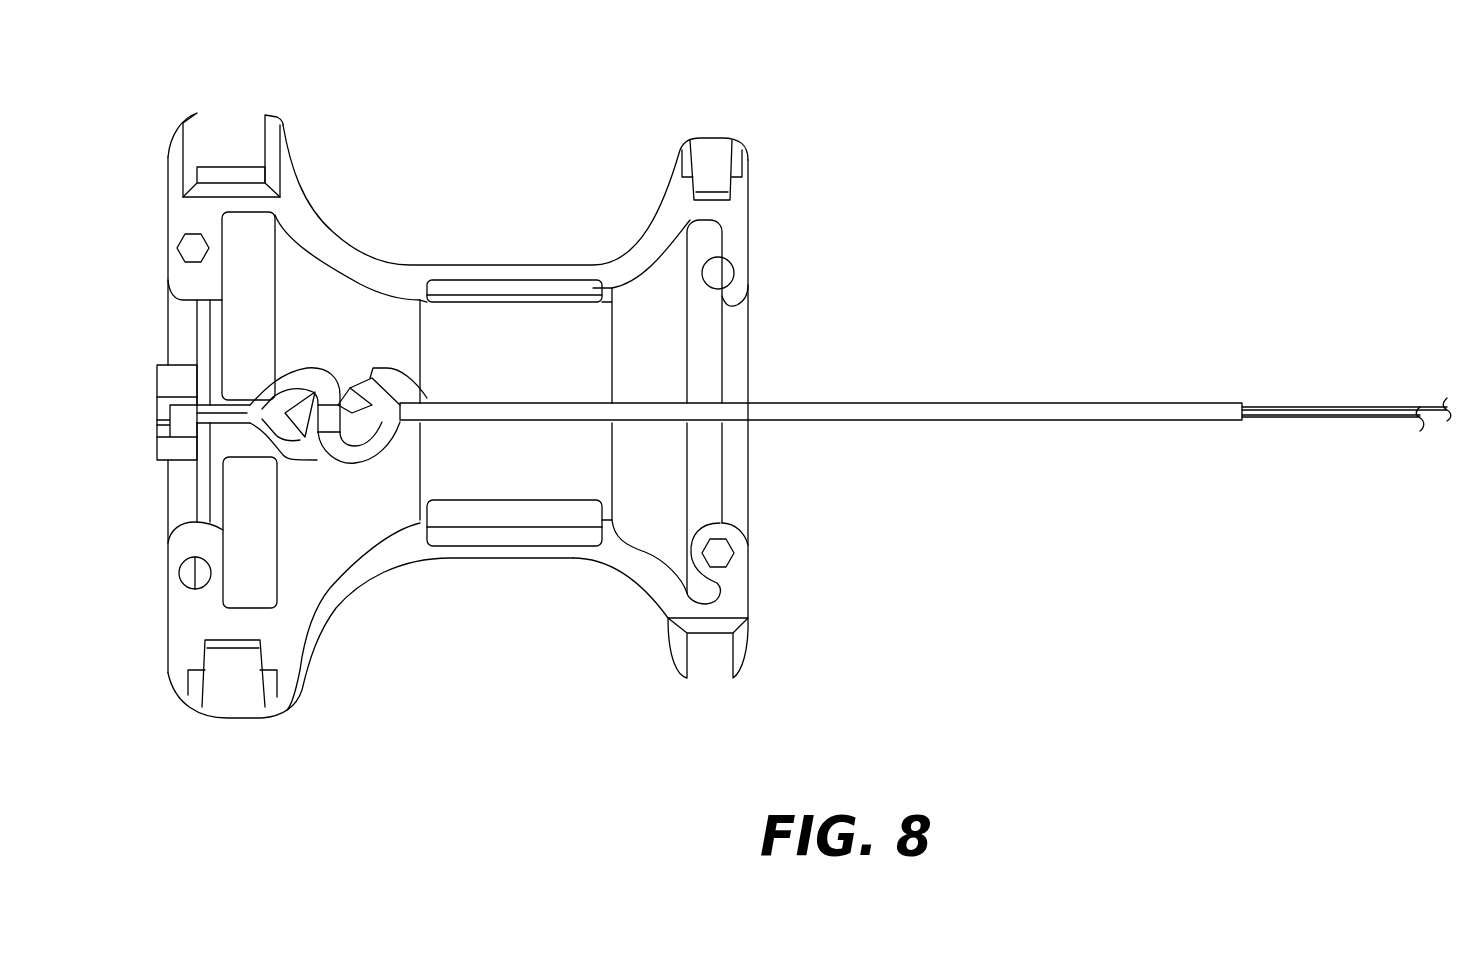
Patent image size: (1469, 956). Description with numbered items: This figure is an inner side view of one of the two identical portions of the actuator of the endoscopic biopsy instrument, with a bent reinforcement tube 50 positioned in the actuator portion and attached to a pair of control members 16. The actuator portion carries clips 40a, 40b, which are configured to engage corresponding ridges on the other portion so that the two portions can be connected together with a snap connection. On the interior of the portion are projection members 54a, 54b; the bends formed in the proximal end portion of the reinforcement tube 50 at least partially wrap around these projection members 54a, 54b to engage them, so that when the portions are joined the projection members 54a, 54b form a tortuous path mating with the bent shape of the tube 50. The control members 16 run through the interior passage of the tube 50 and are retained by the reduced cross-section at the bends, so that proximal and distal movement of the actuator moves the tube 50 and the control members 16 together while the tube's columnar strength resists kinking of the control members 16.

The control members 16 is at (1343, 407).
The clip 40a is at (718, 172).
The clip 40b is at (243, 672).
The reinforcement tube 50 is at (832, 412).
The projection member 54a is at (298, 425).
The projection member 54b is at (352, 400).